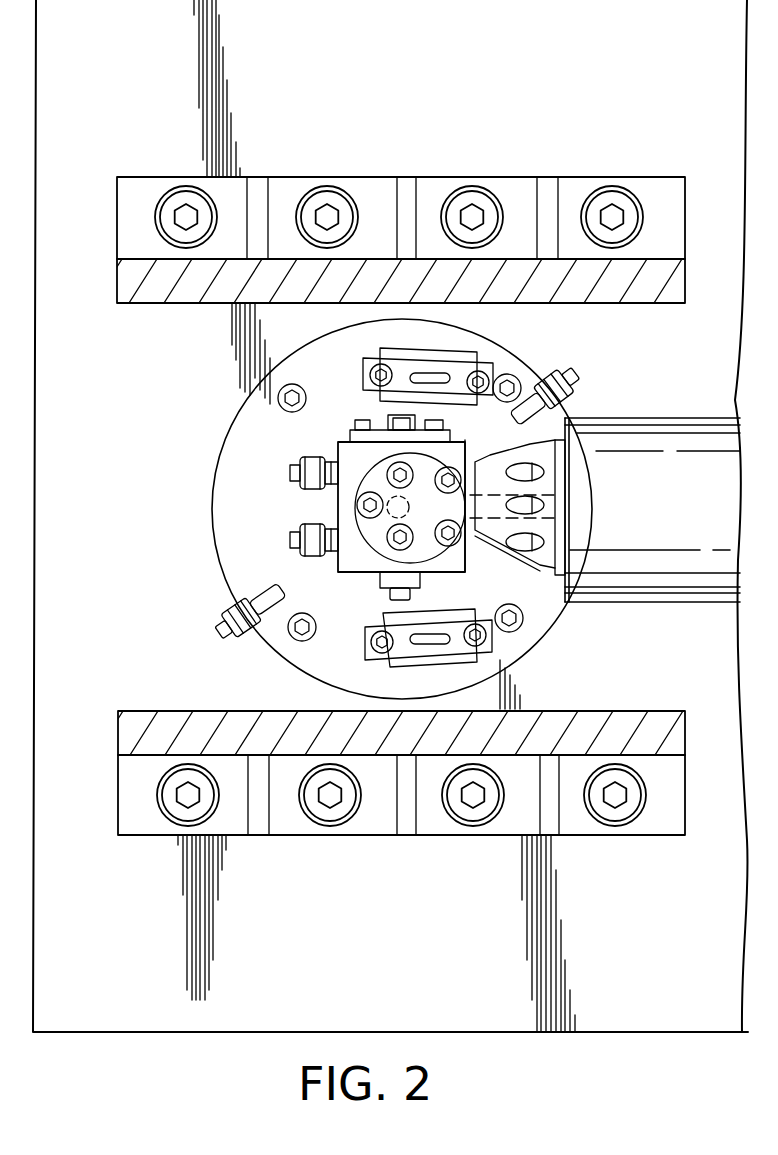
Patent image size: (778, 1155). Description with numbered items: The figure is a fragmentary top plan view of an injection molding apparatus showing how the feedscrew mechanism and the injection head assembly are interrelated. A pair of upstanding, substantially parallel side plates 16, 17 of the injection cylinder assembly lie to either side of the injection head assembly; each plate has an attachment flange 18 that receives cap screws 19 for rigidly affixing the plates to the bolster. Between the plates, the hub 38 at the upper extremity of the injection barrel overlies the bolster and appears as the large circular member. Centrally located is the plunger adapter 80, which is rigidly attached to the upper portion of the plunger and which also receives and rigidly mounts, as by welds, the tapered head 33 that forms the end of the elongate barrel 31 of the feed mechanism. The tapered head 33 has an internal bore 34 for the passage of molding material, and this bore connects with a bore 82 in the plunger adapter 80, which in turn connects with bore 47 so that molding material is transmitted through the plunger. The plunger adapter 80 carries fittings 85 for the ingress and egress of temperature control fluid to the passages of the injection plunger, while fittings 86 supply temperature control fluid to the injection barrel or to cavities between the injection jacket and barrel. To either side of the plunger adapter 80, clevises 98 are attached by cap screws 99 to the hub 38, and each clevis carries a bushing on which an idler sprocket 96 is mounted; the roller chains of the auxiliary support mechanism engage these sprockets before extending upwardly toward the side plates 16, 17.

The side plate 16 is at (673, 733).
The side plate 17 is at (648, 293).
The attachment flange 18 is at (660, 186).
The cap screw 19 is at (612, 212).
The elongate barrel 31 is at (652, 410).
The tapered head 33 is at (553, 575).
The internal bore 34 is at (540, 520).
The hub 38 is at (247, 418).
The bore 47 is at (387, 488).
The plunger adapter 80 is at (345, 505).
The bore 82 is at (418, 520).
The fitting 85 is at (300, 473).
The fitting 86 is at (562, 386).
The idler sprocket 96 is at (445, 378).
The clevis 98 is at (452, 353).
The cap screw 99 is at (381, 375).